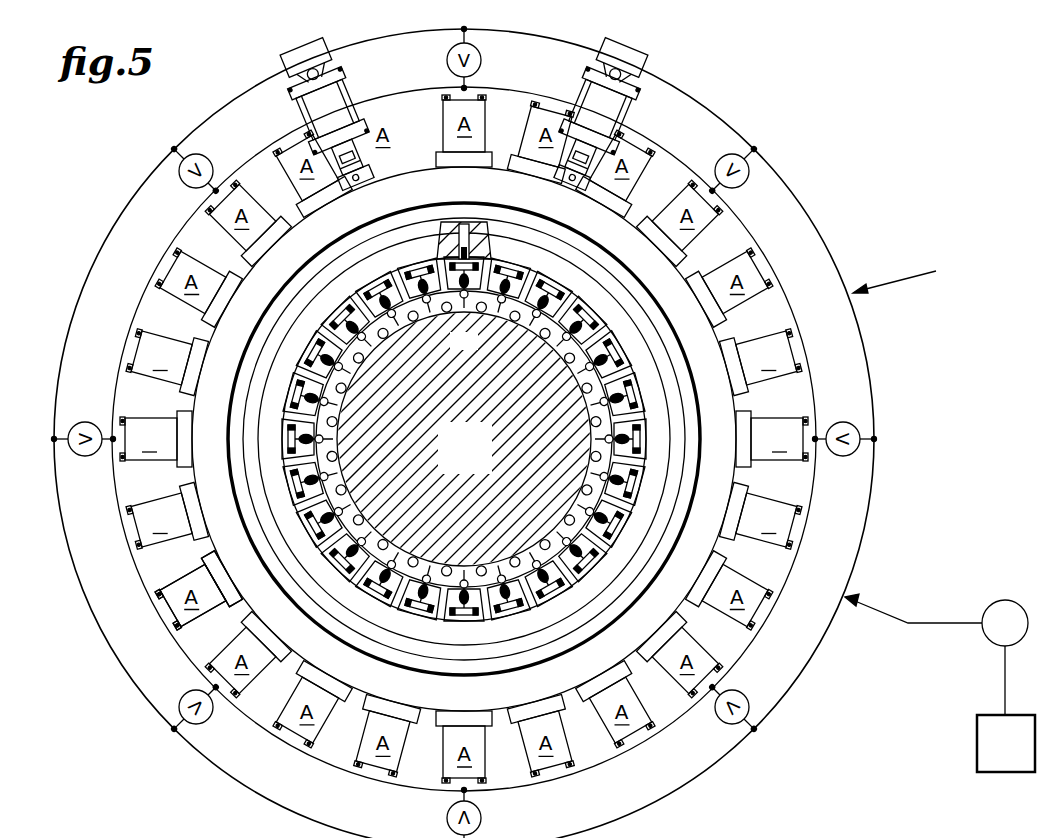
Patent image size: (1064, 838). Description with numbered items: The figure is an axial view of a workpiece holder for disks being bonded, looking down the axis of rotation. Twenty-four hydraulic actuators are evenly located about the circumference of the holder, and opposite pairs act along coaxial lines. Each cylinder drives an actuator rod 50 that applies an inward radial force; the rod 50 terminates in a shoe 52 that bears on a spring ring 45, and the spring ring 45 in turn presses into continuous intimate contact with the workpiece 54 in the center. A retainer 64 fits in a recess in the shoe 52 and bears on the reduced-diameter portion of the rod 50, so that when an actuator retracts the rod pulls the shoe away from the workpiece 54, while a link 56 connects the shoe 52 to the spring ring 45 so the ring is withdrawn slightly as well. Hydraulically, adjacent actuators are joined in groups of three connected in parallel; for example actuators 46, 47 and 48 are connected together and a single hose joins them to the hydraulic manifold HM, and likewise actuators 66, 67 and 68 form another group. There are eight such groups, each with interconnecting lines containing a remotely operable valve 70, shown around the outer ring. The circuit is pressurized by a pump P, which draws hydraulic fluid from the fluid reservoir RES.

The spring ring 45 is at (464, 439).
The hydraulic actuator 46 is at (172, 340).
The hydraulic actuator 47 is at (158, 417).
The hydraulic actuator 48 is at (160, 500).
The actuator rod 50 is at (462, 222).
The shoe 52 is at (560, 297).
The workpiece 54 is at (455, 469).
The link 56 is at (604, 303).
The retainer 64 is at (517, 257).
The hydraulic actuator 66 is at (757, 338).
The hydraulic actuator 67 is at (770, 417).
The hydraulic actuator 68 is at (770, 500).
The valve 70 is at (477, 52).
The hydraulic manifold HM is at (912, 276).
The pump P is at (936, 620).
The fluid reservoir RES is at (1006, 709).